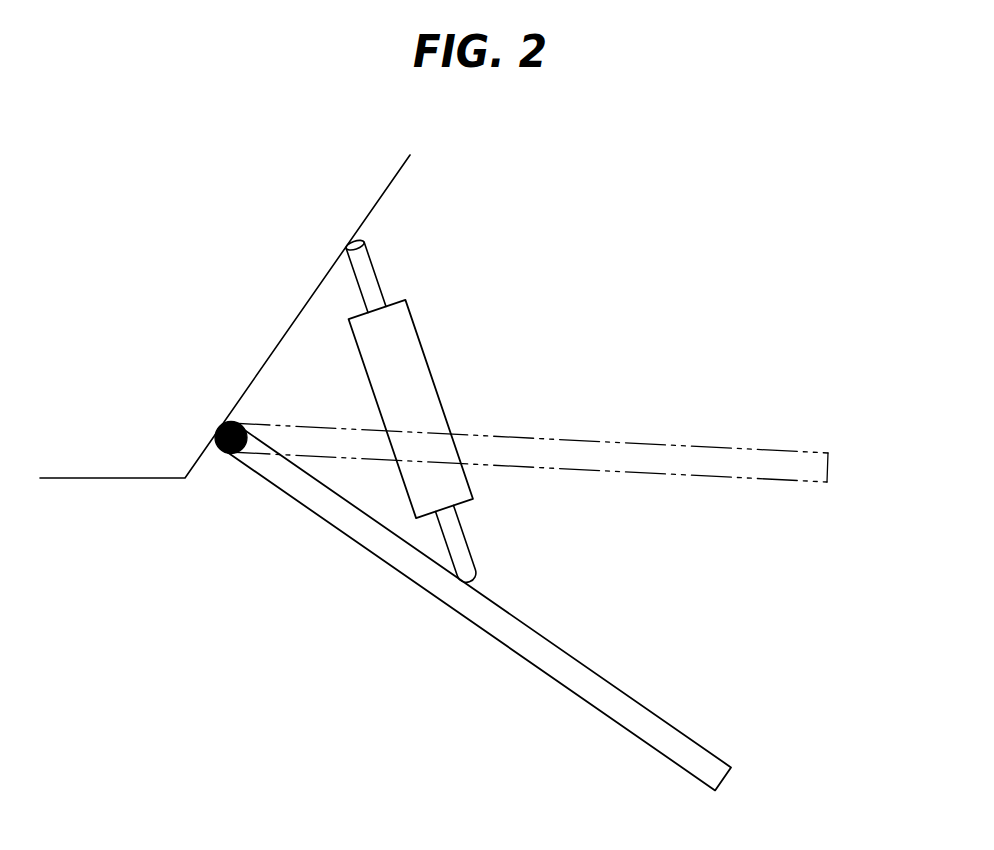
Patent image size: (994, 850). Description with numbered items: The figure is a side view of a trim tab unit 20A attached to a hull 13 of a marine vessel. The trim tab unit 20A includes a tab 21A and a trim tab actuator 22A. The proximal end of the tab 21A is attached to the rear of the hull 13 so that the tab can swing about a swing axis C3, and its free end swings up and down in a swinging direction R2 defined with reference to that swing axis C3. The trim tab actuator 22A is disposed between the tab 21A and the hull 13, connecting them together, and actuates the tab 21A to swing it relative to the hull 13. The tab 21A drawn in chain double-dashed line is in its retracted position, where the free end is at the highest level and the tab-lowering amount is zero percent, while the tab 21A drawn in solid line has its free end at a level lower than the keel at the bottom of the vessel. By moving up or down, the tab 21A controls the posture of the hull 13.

The hull 13 is at (393, 180).
The trim tab unit 20A is at (677, 323).
The tab 21A is at (747, 450).
The trim tab actuator 22A is at (433, 362).
The swing axis C3 is at (220, 452).
The swinging direction R2 is at (860, 540).